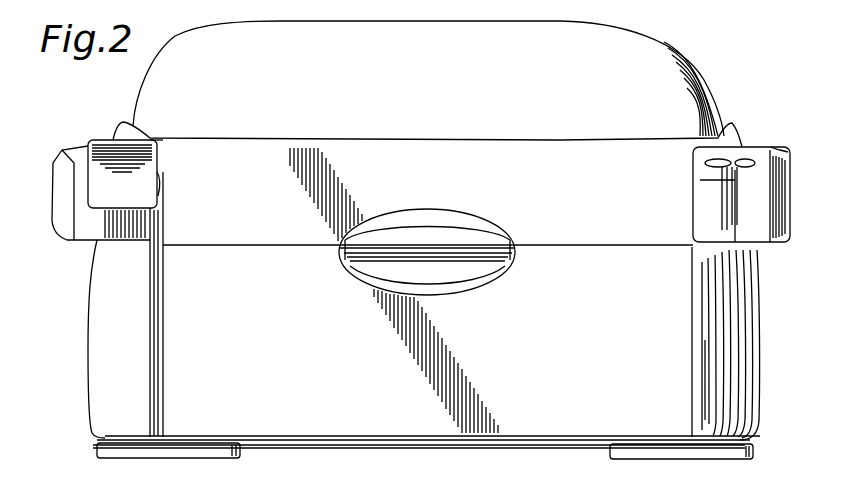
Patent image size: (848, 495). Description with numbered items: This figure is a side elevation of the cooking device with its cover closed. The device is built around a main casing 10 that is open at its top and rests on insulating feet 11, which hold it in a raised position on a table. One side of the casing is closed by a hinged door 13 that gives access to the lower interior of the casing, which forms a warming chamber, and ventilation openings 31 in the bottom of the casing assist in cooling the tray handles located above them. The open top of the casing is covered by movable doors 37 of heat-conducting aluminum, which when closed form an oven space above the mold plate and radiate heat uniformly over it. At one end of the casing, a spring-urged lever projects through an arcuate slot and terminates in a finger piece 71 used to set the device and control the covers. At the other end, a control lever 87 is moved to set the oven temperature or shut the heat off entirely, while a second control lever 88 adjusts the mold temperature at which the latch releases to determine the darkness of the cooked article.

The main casing 10 is at (100, 314).
The insulating feet 11 is at (158, 458).
The hinged door 13 is at (368, 427).
The ventilation openings 31 is at (422, 448).
The movable doors 37 is at (573, 27).
The finger piece 71 is at (100, 147).
The control lever 87 is at (742, 158).
The control lever 88 is at (716, 160).